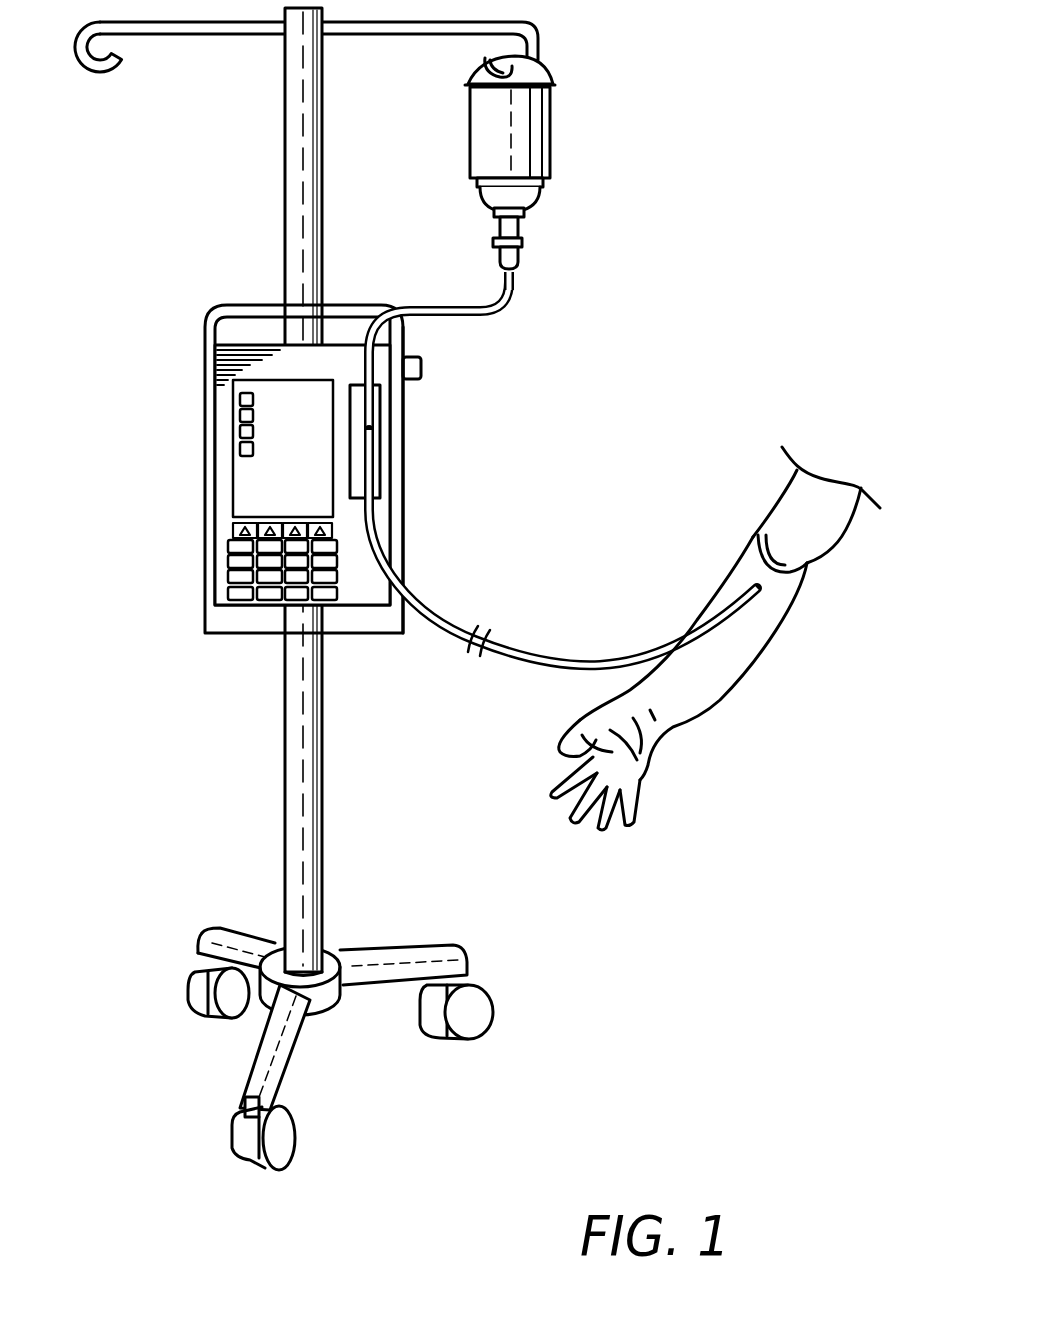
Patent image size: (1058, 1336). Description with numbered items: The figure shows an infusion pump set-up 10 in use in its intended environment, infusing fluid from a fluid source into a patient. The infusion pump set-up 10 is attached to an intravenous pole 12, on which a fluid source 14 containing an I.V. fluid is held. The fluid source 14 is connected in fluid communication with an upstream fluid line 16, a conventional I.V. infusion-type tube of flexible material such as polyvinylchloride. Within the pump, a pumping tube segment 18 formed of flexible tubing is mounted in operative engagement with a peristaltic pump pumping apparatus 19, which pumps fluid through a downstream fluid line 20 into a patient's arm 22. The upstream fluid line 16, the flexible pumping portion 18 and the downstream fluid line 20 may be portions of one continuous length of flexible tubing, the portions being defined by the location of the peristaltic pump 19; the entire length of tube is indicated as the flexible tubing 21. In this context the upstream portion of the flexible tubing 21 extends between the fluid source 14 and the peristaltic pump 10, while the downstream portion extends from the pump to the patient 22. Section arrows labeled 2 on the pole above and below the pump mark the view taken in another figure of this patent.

The section line for FIG. 2 is at (365, 300).
The infusion pump set-up 10 is at (448, 370).
The intravenous (I.V.) pole 12 is at (287, 133).
The fluid source 14 is at (470, 130).
The upstream fluid line 16 is at (458, 305).
The pumping tube segment 18 is at (381, 497).
The peristaltic pump pumping apparatus 19 is at (403, 432).
The downstream fluid line 20 is at (531, 668).
The flexible tubing 21 is at (532, 285).
The patient's arm 22 is at (795, 508).